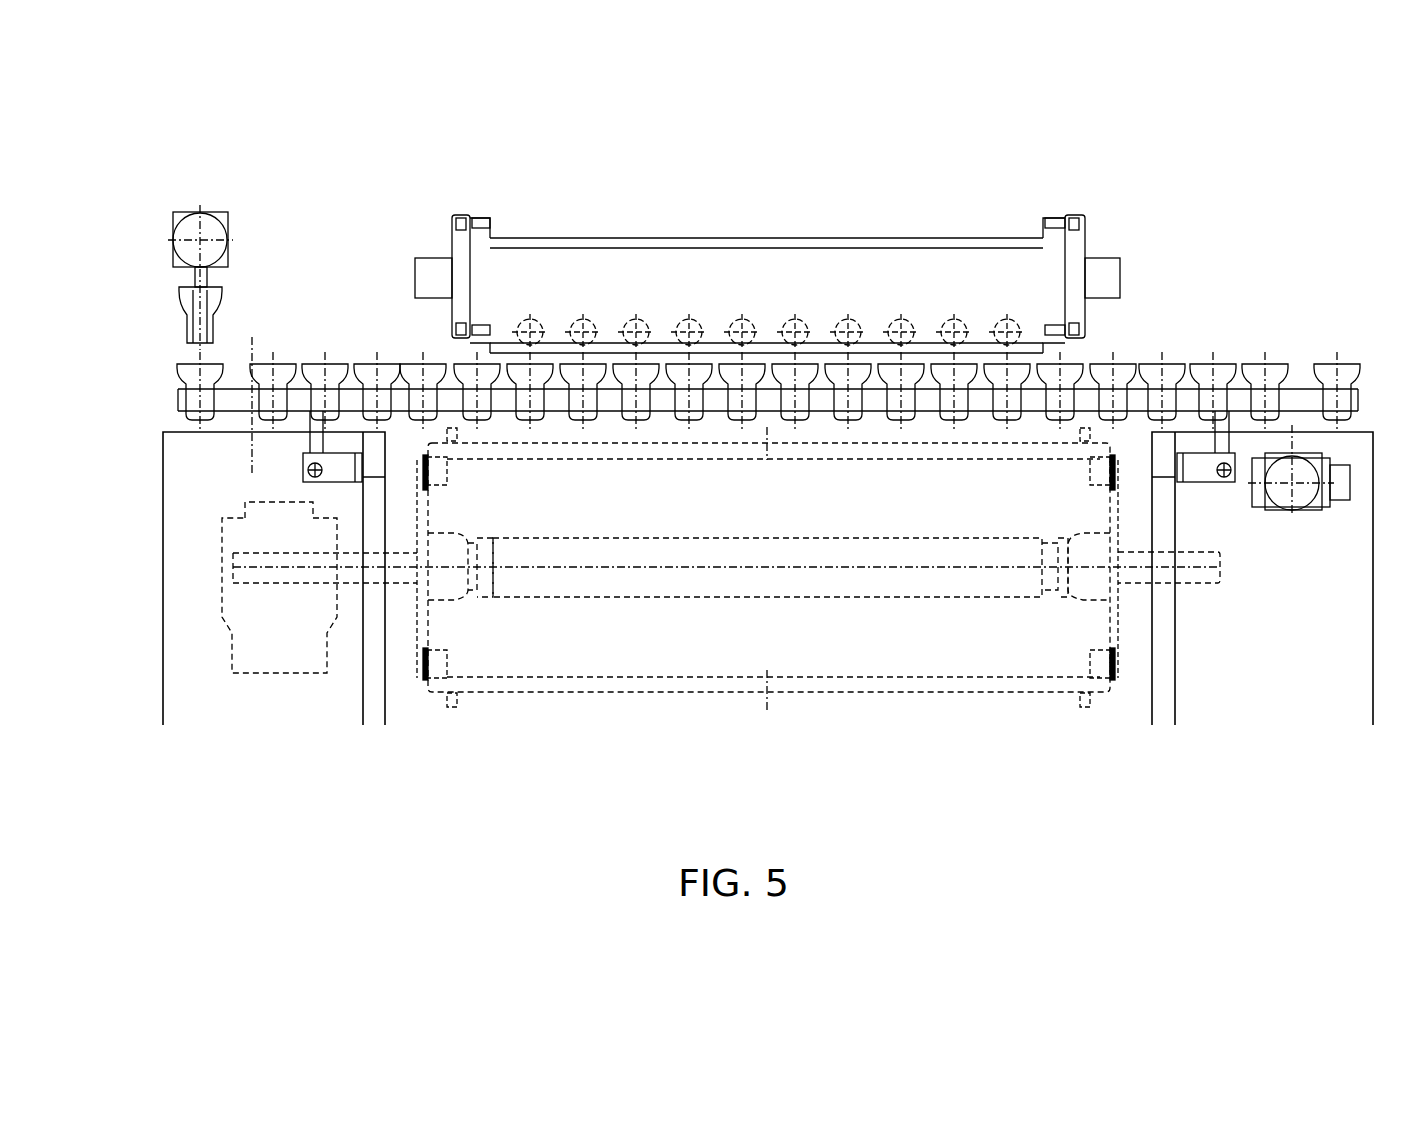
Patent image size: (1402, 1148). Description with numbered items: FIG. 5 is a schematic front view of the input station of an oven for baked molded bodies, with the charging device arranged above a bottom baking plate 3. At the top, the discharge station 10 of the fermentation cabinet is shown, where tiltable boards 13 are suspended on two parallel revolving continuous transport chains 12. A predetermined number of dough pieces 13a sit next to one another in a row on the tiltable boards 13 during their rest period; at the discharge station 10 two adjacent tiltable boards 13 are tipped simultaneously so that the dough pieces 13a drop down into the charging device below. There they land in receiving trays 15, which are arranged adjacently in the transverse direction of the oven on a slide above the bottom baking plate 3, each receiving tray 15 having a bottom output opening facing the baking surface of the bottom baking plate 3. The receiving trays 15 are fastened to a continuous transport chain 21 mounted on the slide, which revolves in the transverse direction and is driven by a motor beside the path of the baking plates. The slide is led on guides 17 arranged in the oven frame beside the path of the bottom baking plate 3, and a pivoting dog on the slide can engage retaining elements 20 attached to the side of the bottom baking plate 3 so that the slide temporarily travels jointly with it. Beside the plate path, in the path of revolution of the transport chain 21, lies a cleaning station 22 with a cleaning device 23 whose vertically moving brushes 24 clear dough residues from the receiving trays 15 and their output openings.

The bottom baking plate 3 is at (615, 450).
The discharge station 10 is at (573, 210).
The transport chain 12 is at (452, 225).
The tiltable board 13 is at (947, 238).
The dough piece 13a is at (586, 332).
The receiving tray 15 is at (178, 370).
The guide 17 is at (310, 441).
The retaining element 20 is at (453, 435).
The transport chain 21 is at (1288, 372).
The cleaning station 22 is at (281, 200).
The cleaning device 23 is at (185, 244).
The brush 24 is at (188, 322).